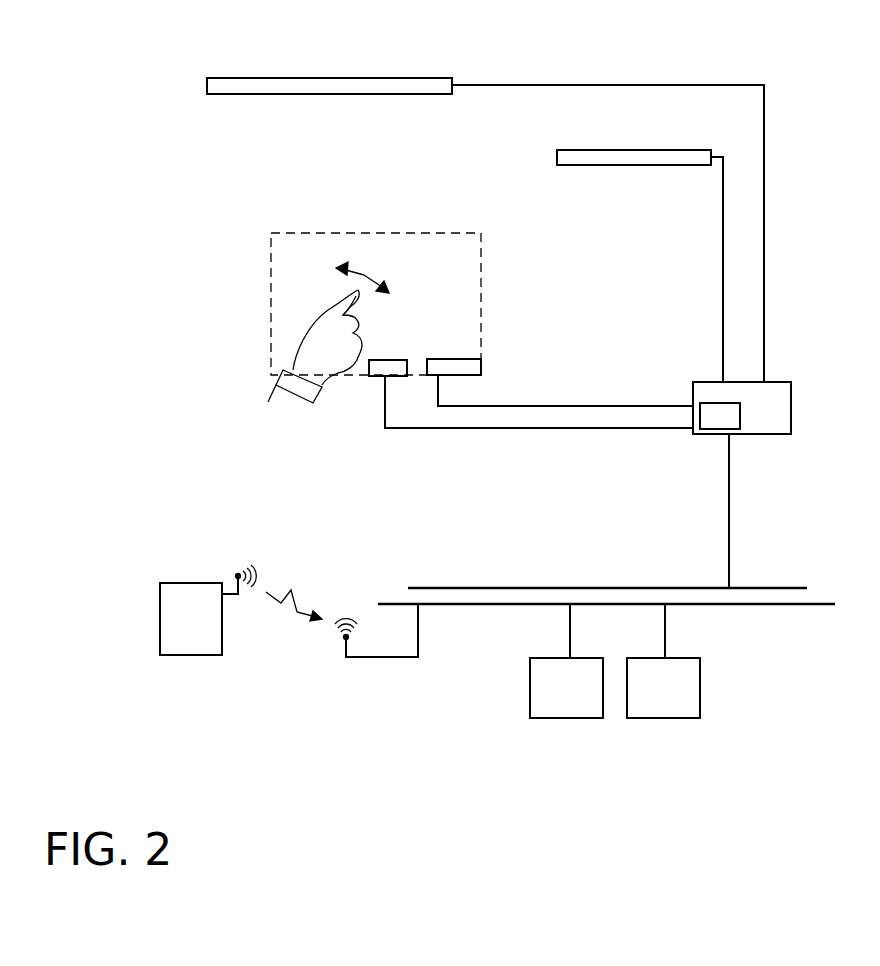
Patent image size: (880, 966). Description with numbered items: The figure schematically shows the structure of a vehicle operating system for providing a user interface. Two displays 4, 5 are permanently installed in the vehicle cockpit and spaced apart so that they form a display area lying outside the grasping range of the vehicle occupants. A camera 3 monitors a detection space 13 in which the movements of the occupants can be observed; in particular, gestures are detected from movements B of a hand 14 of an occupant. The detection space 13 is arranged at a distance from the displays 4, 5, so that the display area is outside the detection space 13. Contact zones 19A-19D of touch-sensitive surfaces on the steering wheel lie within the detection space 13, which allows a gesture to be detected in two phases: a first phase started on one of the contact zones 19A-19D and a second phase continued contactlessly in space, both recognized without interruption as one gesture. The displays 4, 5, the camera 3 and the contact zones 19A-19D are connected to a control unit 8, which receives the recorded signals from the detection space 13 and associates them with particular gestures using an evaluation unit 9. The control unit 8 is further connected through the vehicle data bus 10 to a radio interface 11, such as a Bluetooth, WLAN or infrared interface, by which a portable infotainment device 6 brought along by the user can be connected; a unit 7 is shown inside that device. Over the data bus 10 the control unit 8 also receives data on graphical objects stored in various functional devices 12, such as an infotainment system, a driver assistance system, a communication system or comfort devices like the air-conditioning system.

The camera 3 is at (449, 367).
The display 4 is at (391, 85).
The display 5 is at (678, 157).
The portable infotainment device 6 is at (161, 596).
The transmitter unit 7 is at (188, 634).
The control unit 8 is at (768, 395).
The evaluation unit 9 is at (727, 417).
The data bus 10 is at (775, 604).
The radio interface 11 is at (281, 603).
The functional device 12 is at (573, 695).
The detection space 13 is at (293, 255).
The hand 14 is at (313, 368).
The contact zones 19A-19D is at (385, 368).
The movements B is at (364, 275).